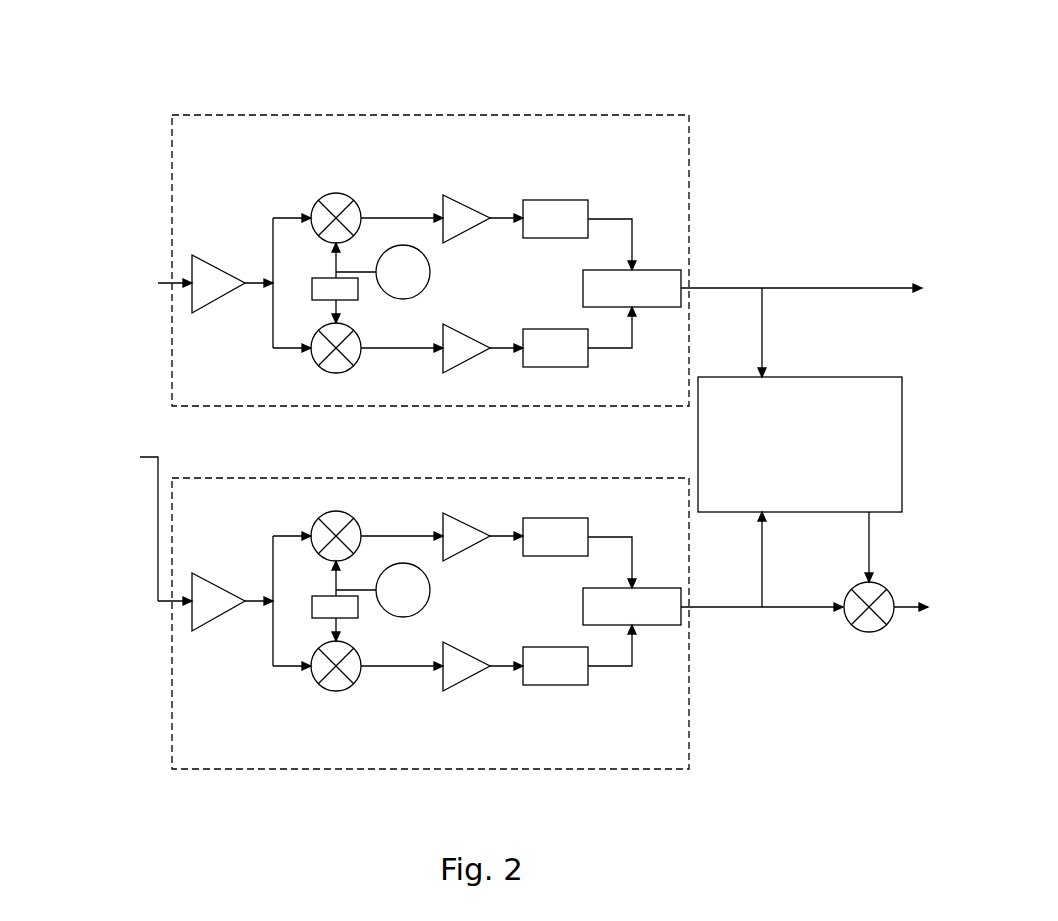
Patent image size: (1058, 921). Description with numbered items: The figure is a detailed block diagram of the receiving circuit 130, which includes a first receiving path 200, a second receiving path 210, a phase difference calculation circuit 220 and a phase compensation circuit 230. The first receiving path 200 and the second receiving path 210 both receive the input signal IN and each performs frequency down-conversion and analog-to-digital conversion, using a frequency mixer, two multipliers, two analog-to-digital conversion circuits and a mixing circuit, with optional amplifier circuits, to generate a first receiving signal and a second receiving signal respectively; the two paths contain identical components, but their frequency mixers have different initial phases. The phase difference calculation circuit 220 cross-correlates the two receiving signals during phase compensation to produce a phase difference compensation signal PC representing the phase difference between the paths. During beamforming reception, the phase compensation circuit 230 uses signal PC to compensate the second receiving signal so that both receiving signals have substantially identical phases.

The receiving circuit 130 is at (763, 36).
The first receiving path 200 is at (351, 153).
The second receiving path 210 is at (340, 755).
The phase difference calculation circuit 220 is at (819, 426).
The phase compensation circuit 230 is at (852, 627).